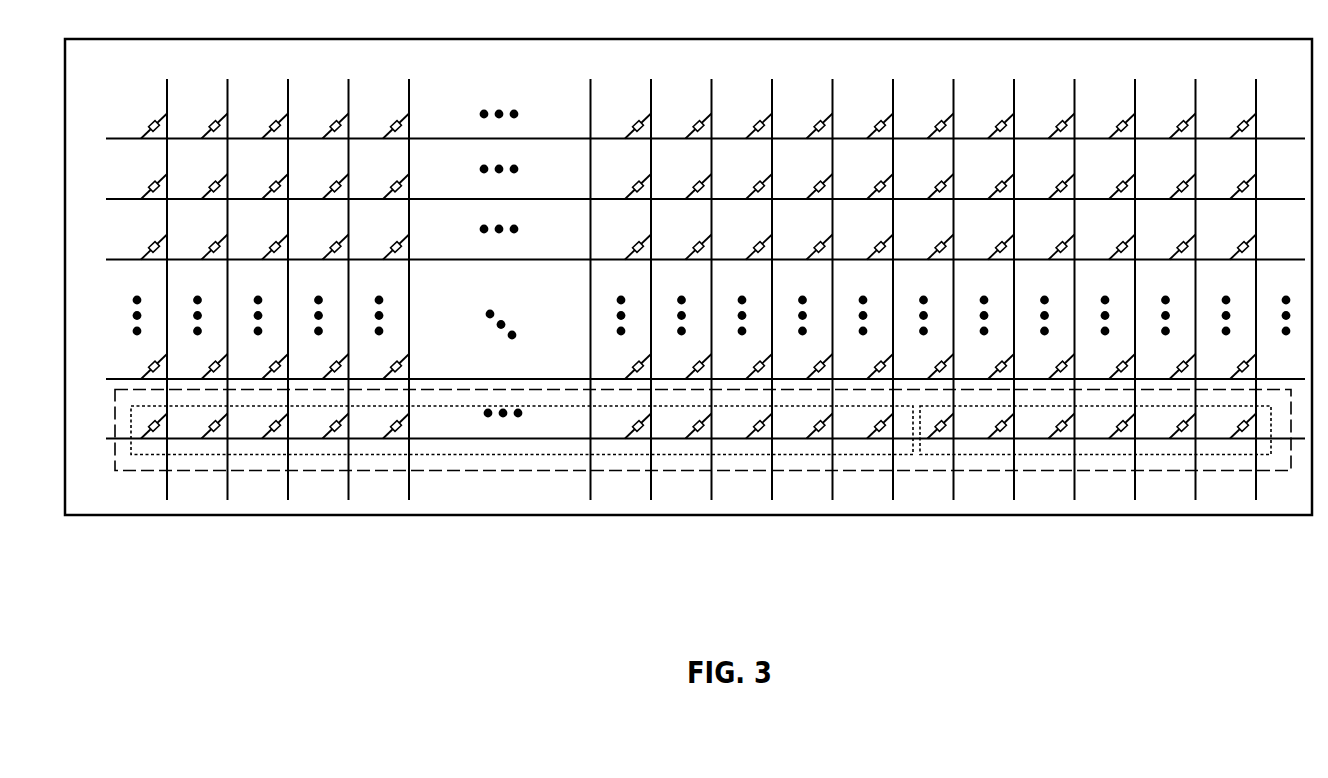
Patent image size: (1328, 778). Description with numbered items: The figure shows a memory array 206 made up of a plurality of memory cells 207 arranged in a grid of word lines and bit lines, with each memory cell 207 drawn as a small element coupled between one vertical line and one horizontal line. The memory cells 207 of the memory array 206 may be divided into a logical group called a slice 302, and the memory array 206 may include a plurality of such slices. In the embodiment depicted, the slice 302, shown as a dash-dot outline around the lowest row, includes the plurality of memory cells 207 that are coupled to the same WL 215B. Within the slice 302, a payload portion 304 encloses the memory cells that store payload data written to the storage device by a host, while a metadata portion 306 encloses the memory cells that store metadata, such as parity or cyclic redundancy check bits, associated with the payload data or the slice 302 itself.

The memory array 206 is at (688, 277).
The memory cell 207 is at (395, 427).
The WL 215B is at (112, 440).
The slice 302 is at (447, 471).
The payload portion 304 is at (522, 456).
The metadata portion 306 is at (1062, 456).